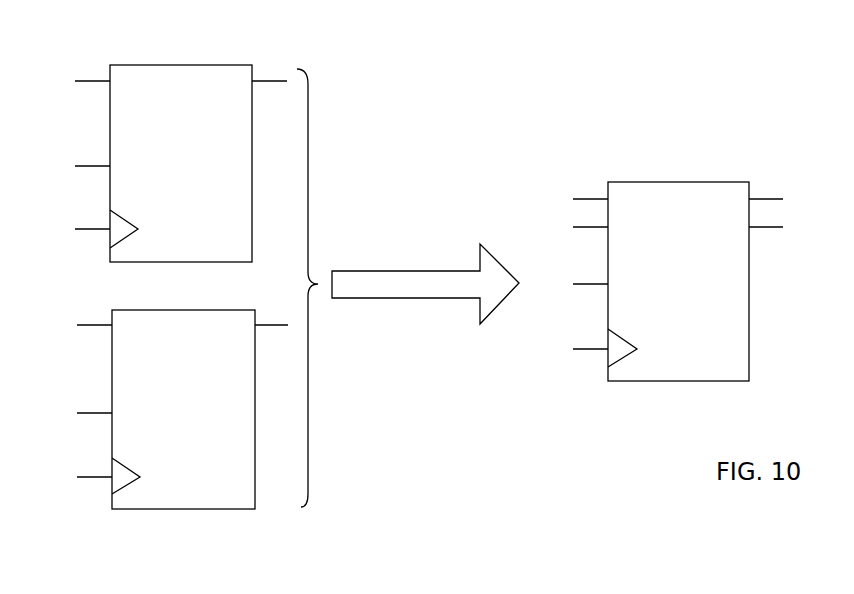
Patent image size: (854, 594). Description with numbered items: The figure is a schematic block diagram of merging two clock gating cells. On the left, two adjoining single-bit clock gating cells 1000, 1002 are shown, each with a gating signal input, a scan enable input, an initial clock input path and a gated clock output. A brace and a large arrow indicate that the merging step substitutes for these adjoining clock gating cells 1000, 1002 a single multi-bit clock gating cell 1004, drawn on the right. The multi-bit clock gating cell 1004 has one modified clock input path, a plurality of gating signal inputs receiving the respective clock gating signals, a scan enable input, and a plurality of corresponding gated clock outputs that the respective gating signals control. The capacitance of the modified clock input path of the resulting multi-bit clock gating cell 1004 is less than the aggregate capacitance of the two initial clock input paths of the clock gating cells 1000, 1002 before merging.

The clock gating cell 1000 is at (174, 65).
The clock gating cell 1002 is at (183, 509).
The multi-bit clock gating cell 1004 is at (660, 182).